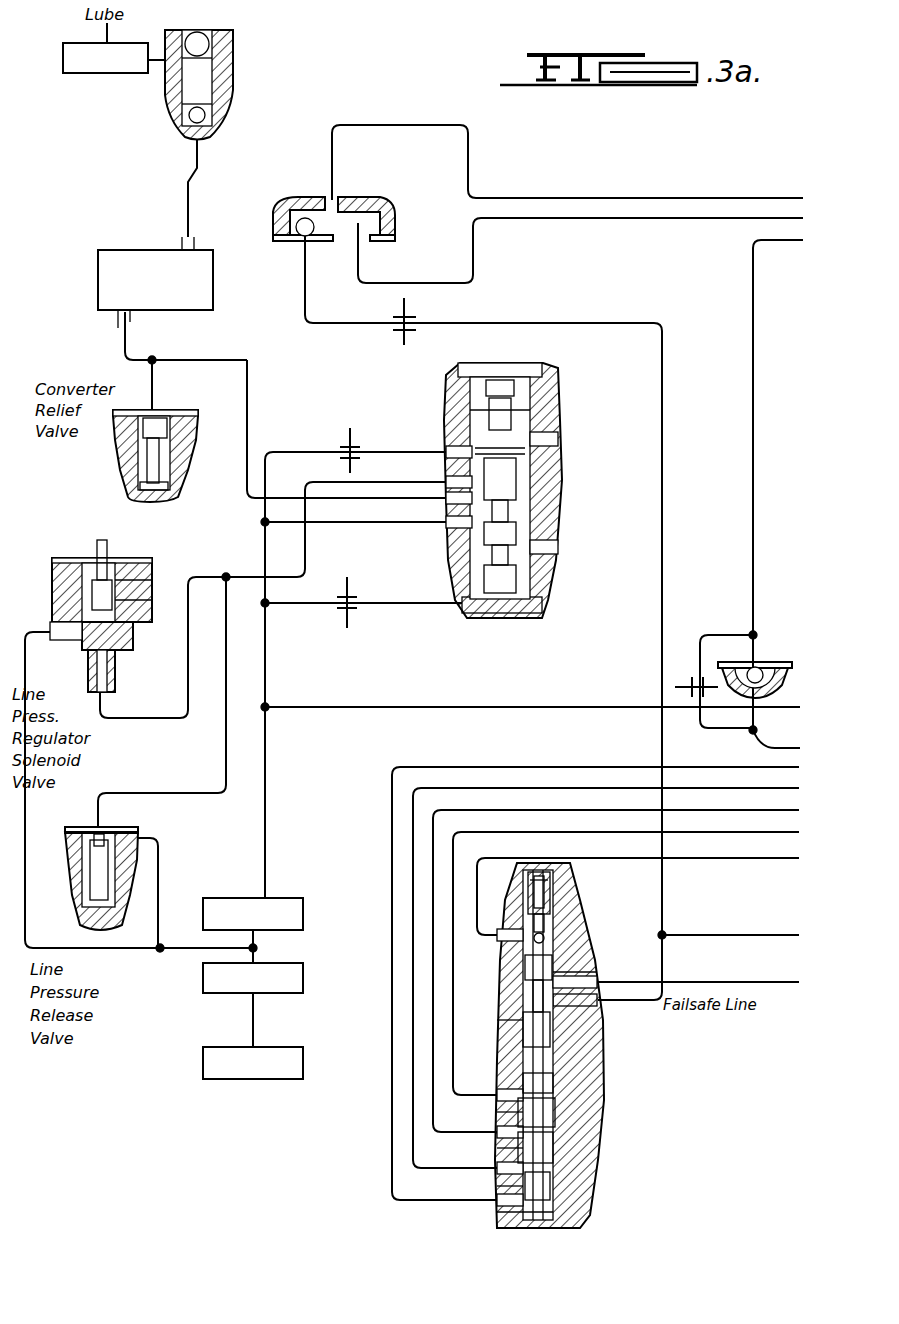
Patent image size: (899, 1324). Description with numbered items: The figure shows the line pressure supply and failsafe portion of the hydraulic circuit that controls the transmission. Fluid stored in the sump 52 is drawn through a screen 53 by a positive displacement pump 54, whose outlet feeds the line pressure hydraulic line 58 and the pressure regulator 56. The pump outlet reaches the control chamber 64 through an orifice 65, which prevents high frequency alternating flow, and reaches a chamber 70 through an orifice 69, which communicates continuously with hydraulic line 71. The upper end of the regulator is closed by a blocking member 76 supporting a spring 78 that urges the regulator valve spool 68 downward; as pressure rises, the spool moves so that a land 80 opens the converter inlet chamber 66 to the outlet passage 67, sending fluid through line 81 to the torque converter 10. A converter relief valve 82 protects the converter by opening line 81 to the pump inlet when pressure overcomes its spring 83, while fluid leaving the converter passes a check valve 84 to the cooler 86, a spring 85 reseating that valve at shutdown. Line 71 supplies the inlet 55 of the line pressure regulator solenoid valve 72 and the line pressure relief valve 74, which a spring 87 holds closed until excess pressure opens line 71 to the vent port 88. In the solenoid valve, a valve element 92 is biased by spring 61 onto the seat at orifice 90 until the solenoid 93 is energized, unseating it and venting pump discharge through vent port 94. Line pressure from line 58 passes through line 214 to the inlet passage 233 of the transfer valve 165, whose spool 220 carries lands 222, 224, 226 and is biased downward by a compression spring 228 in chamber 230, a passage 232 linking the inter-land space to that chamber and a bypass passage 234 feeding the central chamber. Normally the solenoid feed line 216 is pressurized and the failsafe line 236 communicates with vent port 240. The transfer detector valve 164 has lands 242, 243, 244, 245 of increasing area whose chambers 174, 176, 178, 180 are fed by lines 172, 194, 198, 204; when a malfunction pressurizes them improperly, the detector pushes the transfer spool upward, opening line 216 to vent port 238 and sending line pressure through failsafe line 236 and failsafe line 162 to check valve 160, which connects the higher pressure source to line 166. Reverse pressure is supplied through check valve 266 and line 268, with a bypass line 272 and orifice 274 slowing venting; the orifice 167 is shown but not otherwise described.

The torque converter 10 is at (98, 265).
The sump 52 is at (303, 1056).
The screen 53 is at (305, 970).
The pump 54 is at (292, 903).
The inlet 55 is at (115, 690).
The pressure regulator 56 is at (440, 549).
The line pressure hydraulic line 58 is at (410, 708).
The spring 61 is at (112, 572).
The control chamber 64 is at (548, 604).
The orifice 65 is at (352, 612).
The converter inlet chamber 66 is at (520, 540).
The outlet passage 67 is at (520, 514).
The regulator valve spool 68 is at (505, 556).
The orifice 69 is at (347, 440).
The chamber 70 is at (470, 432).
The hydraulic line 71 is at (306, 546).
The line pressure regulator solenoid valve 72 is at (45, 559).
The line pressure relief valve 74 is at (135, 887).
The blocking member 76 is at (548, 375).
The spring 78 is at (520, 445).
The land 80 is at (512, 480).
The line 81 is at (240, 360).
The converter relief valve 82 is at (172, 497).
The spring 83 is at (150, 462).
The check valve 84 is at (222, 113).
The spring 85 is at (205, 80).
The cooler 86 is at (90, 75).
The spring 87 is at (95, 877).
The vent port 88 is at (130, 831).
The orifice 90 is at (122, 650).
The valve element 92 is at (148, 588).
The solenoid 93 is at (152, 606).
The vent port 94 is at (60, 616).
The check valve 160 is at (281, 188).
The failsafe line 162 is at (660, 736).
The transfer detector valve 164 is at (693, 1091).
The transfer valve 165 is at (625, 946).
The line 166 is at (398, 124).
The orifice 167 is at (318, 325).
The line 172 is at (390, 775).
The intermediate/low reverse chamber 174 is at (497, 1214).
The reverse, low/reverse chamber 176 is at (497, 1186).
The forward clutch chamber 178 is at (497, 1148).
The direct clutch chamber 180 is at (497, 1112).
The line 194 is at (436, 790).
The line 198 is at (490, 810).
The line 204 is at (552, 832).
The line 214 is at (770, 980).
The solenoid feed line 216 is at (772, 860).
The spool 220 is at (528, 990).
The land 222 is at (552, 892).
The land 224 is at (525, 966).
The land 226 is at (553, 1038).
The compression spring 228 is at (528, 895).
The chamber 230 is at (548, 884).
The passage 232 is at (548, 936).
The inlet passage 233 is at (597, 1001).
The bypass passage 234 is at (600, 968).
The failsafe line 236 is at (663, 935).
The vent port 238 is at (548, 918).
The vent port 240 is at (512, 1018).
The land 242 is at (550, 1186).
The land 243 is at (553, 1146).
The land 244 is at (555, 1112).
The land 245 is at (553, 1082).
The check valve 266 is at (783, 654).
The line 268 is at (755, 372).
The bypass line 272 is at (738, 738).
The orifice 274 is at (690, 684).